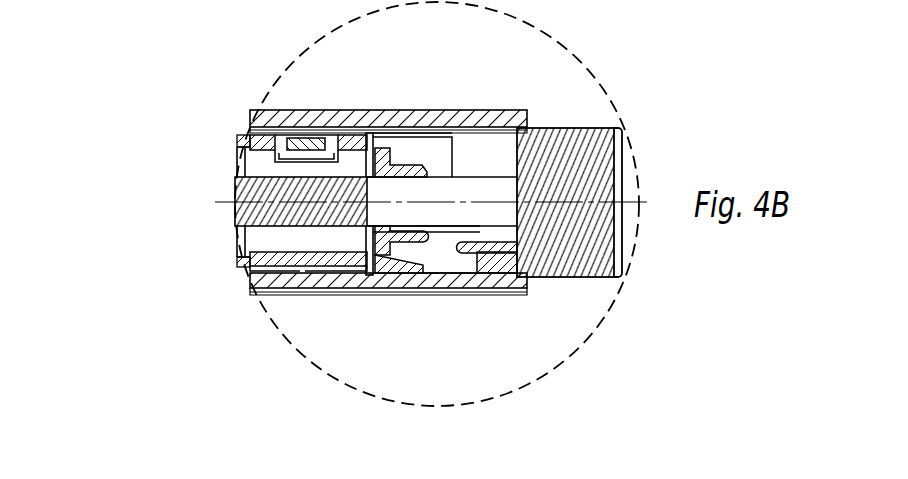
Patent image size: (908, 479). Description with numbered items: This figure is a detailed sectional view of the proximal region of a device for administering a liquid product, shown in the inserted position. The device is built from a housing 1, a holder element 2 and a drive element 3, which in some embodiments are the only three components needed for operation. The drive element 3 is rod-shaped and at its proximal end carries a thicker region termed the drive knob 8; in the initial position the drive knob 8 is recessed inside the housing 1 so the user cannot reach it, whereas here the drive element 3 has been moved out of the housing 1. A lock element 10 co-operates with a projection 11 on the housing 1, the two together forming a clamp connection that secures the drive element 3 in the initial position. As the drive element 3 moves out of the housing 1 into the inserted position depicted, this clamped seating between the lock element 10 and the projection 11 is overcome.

The housing 1 is at (297, 118).
The holder element 2 is at (248, 248).
The drive element 3 is at (277, 188).
The drive knob 8 is at (582, 128).
The lock element 10 is at (493, 253).
The projection 11 is at (343, 295).